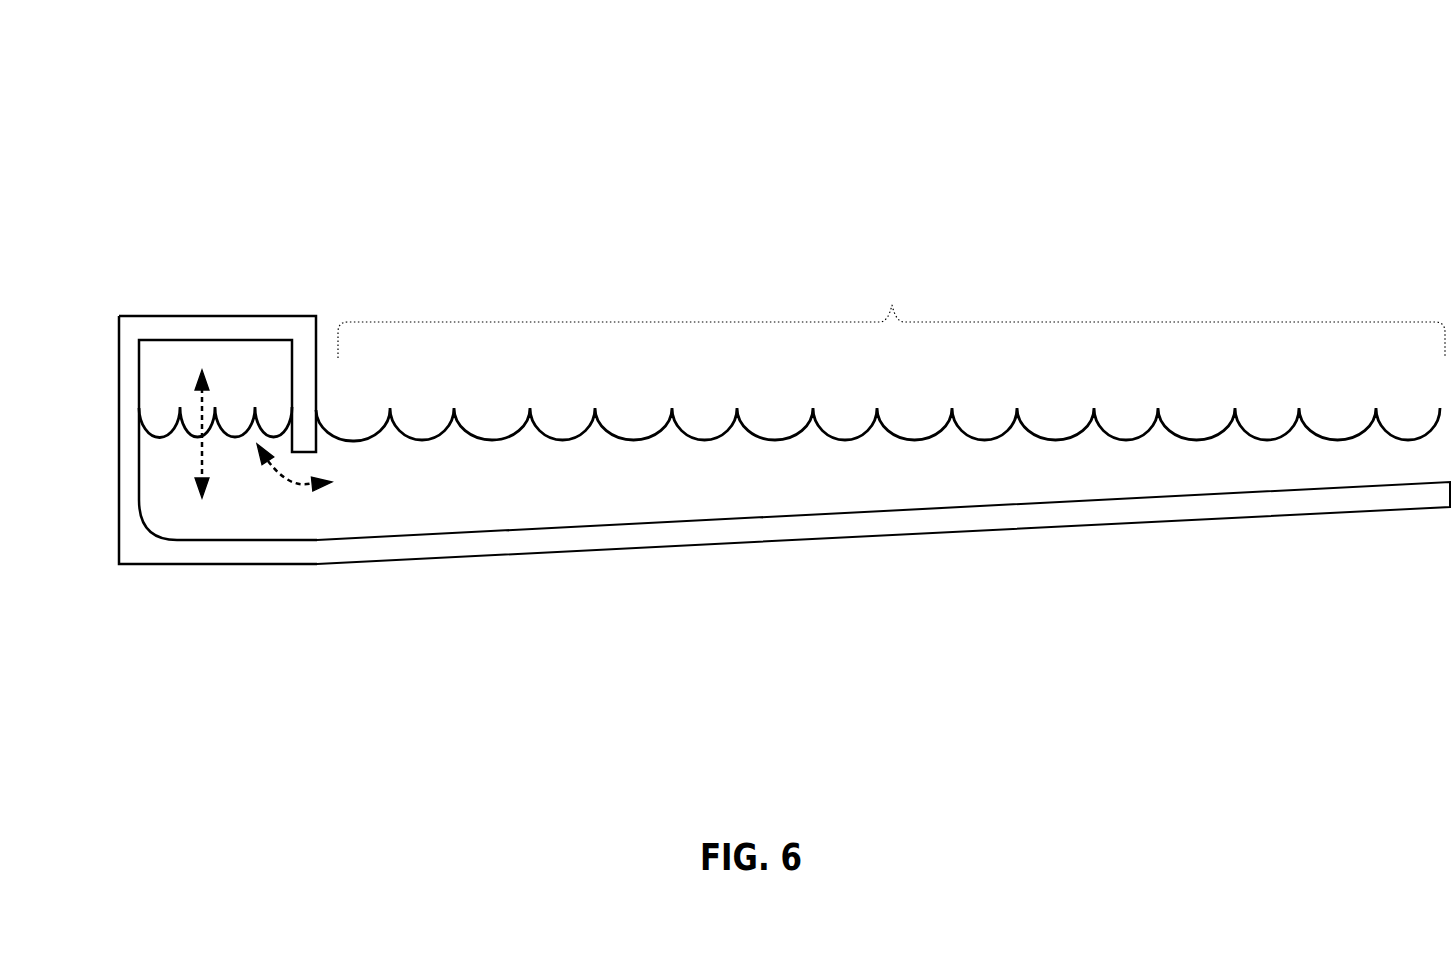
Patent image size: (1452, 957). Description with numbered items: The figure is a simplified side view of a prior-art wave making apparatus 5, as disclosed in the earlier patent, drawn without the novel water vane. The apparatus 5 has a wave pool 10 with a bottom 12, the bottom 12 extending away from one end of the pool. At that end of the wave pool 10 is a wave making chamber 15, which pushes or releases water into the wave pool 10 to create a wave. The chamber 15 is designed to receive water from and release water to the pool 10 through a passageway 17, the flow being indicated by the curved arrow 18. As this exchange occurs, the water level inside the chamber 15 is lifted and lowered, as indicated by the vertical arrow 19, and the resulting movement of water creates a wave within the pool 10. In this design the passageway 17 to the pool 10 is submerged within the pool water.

The wave making apparatus 5 is at (790, 152).
The wave pool 10 is at (893, 303).
The bottom 12 is at (728, 522).
The wave making chamber 15 is at (302, 322).
The passageway 17 is at (304, 514).
The arrow 18 is at (327, 487).
The arrow 19 is at (203, 465).